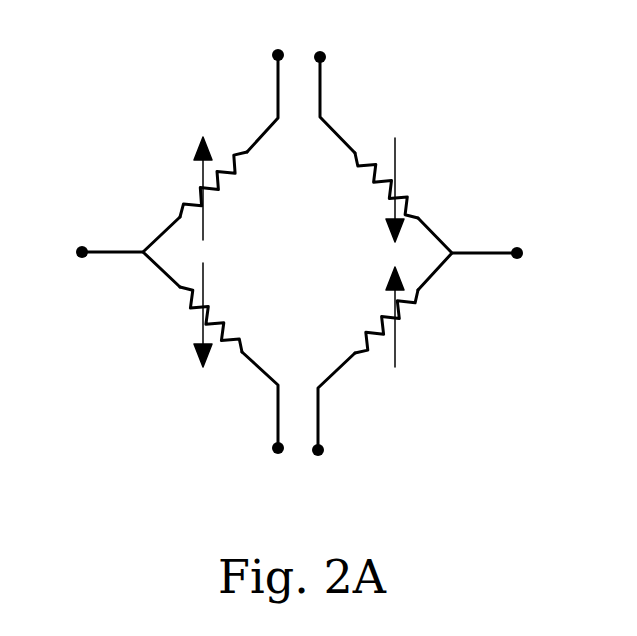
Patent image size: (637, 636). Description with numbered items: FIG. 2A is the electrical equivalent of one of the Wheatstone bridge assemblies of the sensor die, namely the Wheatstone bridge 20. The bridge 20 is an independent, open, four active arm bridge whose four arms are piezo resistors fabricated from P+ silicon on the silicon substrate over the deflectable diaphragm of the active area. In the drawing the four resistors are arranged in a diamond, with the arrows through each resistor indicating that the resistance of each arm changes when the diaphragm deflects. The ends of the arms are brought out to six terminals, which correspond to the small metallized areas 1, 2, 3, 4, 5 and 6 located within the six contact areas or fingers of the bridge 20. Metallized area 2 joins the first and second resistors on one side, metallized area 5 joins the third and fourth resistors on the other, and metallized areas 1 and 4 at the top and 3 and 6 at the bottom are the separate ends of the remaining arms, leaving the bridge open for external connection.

The Wheatstone bridge 20 is at (420, 92).
The metallized area 1 is at (267, 42).
The metallized area 2 is at (69, 252).
The metallized area 3 is at (266, 463).
The metallized area 4 is at (332, 44).
The metallized area 5 is at (528, 253).
The metallized area 6 is at (330, 464).